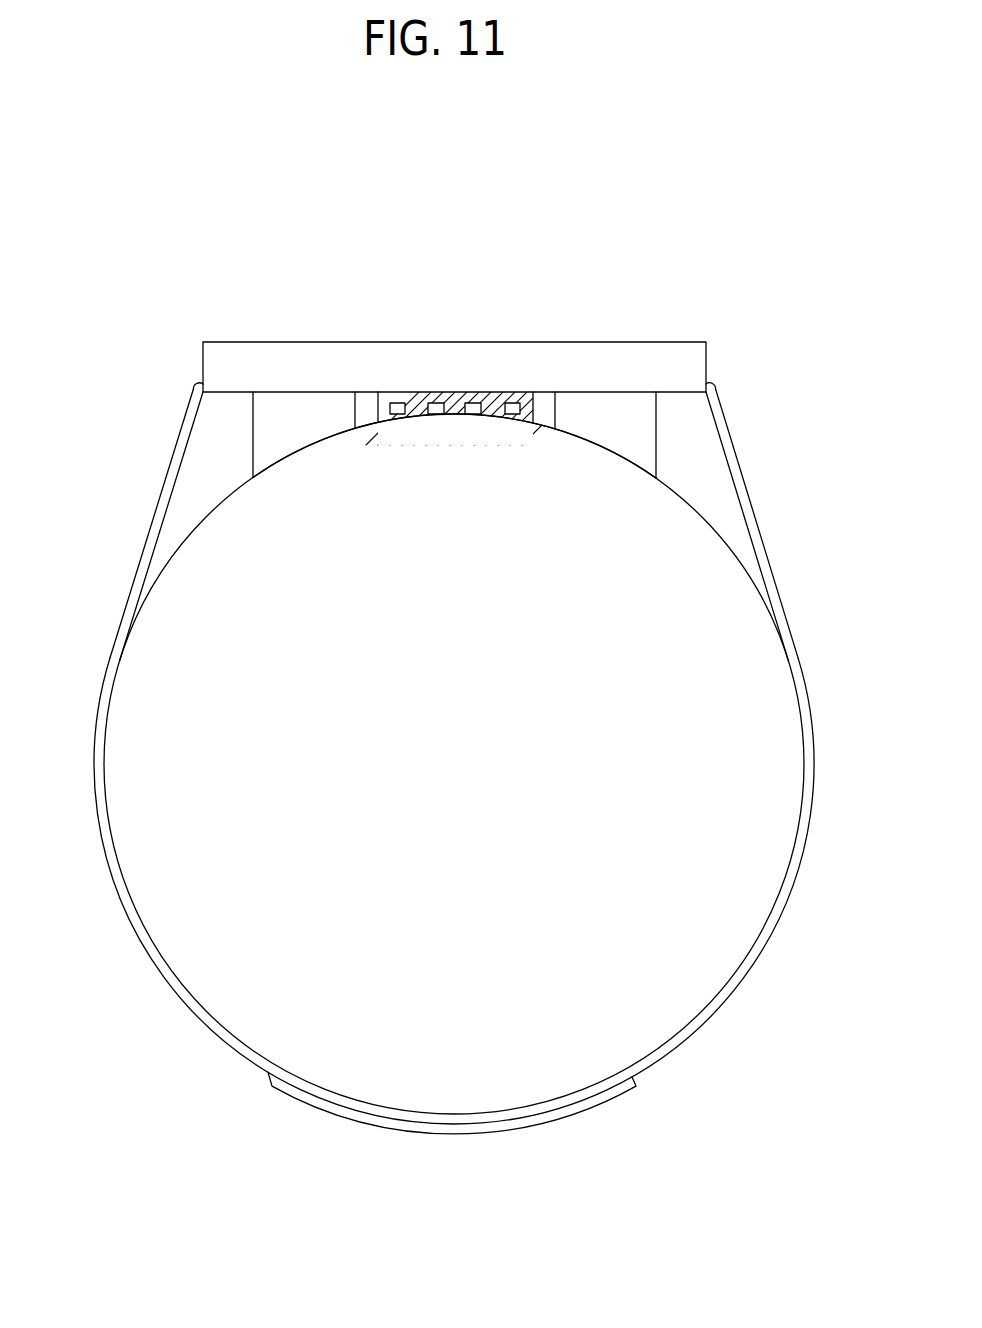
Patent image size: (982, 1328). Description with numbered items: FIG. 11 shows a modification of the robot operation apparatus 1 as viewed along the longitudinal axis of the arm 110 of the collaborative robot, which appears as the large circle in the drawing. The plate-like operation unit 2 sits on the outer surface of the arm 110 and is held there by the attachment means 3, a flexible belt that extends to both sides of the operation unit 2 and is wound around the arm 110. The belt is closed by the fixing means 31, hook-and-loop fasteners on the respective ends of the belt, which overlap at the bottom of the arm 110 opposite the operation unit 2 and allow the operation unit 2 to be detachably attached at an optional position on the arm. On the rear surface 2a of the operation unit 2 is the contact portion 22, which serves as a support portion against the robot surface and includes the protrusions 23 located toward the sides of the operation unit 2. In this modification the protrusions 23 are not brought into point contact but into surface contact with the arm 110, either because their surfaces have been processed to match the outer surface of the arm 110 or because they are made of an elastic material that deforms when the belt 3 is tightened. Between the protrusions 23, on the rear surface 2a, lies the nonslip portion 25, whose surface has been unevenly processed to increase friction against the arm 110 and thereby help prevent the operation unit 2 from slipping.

The robot operation apparatus 1 is at (128, 217).
The operation unit 2 is at (373, 320).
The rear surface 2a is at (365, 393).
The contact portion 22 is at (303, 467).
The protrusions 23 is at (253, 428).
The nonslip portion 25 is at (453, 415).
The attachment means 3 is at (147, 533).
The fixing means 31 is at (497, 1123).
The arm 110 is at (728, 538).